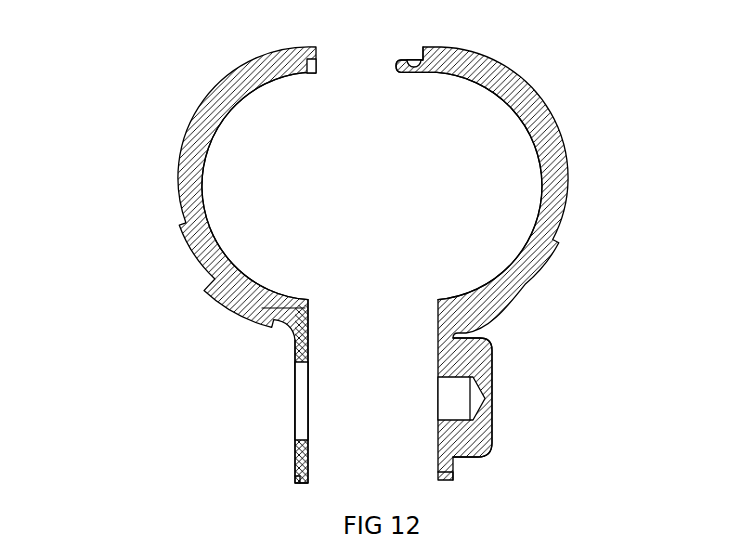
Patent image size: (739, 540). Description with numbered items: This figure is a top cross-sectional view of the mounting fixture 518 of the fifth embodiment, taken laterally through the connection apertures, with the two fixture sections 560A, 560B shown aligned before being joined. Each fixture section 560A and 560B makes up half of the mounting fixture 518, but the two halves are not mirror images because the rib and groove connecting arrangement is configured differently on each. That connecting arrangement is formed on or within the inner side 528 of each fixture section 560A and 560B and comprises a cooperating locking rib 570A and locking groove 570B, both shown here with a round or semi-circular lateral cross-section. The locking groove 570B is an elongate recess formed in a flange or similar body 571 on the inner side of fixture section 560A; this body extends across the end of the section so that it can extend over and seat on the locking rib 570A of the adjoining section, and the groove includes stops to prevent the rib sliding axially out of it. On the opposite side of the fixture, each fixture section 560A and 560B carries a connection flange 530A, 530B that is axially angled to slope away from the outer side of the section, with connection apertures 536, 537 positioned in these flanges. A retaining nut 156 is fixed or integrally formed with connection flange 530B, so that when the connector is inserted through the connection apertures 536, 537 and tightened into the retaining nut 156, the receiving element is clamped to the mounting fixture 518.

The mounting fixture 518 is at (357, 256).
The inner side 528 is at (212, 167).
The fixture section 560A is at (569, 152).
The fixture section 560B is at (178, 153).
The locking rib 570A is at (309, 74).
The locking groove 570B is at (408, 52).
The flange or similar body 571 is at (408, 78).
The retaining nut 156 is at (492, 357).
The connection aperture 536 is at (433, 401).
The connection aperture 537 is at (292, 404).
The connection flange 530A is at (290, 477).
The connection flange 530B is at (455, 473).